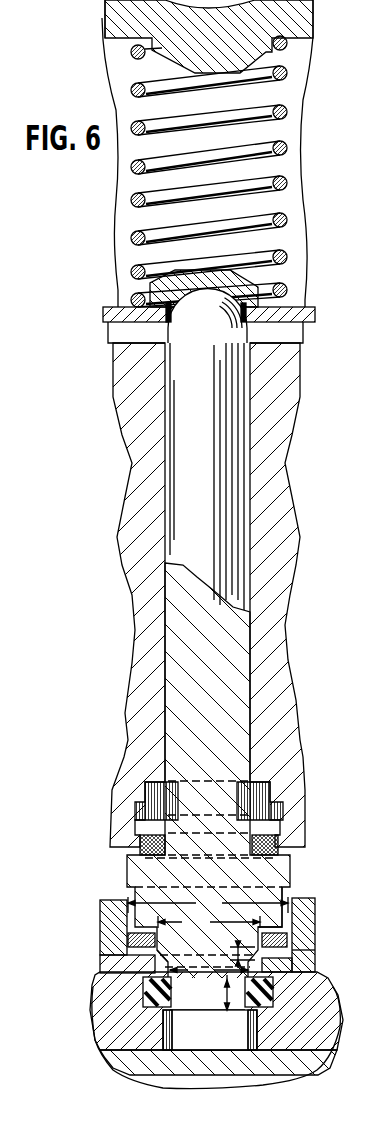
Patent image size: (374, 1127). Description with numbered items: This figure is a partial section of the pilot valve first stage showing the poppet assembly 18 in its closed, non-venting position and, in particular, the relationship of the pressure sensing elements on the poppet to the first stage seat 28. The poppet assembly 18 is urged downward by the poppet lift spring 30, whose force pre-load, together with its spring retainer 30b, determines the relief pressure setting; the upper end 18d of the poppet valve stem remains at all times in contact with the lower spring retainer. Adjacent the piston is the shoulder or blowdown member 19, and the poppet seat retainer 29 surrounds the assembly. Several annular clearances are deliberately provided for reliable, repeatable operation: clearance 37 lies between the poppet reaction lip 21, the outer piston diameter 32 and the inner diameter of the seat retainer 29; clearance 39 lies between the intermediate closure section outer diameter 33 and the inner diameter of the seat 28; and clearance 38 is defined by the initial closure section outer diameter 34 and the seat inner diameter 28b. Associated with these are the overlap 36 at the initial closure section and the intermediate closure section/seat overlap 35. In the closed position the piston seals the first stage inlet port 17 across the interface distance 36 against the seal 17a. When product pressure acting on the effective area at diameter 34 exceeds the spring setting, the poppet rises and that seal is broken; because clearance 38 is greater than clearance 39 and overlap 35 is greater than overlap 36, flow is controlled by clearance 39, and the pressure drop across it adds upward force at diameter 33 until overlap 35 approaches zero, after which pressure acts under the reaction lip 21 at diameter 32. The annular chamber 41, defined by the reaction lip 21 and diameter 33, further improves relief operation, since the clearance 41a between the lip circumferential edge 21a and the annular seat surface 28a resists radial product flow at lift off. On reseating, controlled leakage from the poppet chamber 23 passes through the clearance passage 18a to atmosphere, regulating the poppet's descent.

The first stage inlet port 17 is at (323, 1067).
The seal 17a is at (258, 1040).
The first stage poppet assembly 18 is at (238, 423).
The clearance passage 18a is at (280, 733).
The upper end of poppet valve stem 18d is at (227, 327).
The shoulder or blowdown member 19 is at (270, 817).
The first stage poppet reaction lip 21 is at (132, 940).
The lip circumferential edge 21a is at (307, 950).
The first stage poppet chamber 23 is at (287, 850).
The first stage seat 28 is at (310, 992).
The annular seat surface 28a is at (293, 950).
The inner diameter of seat 28b is at (257, 1060).
The poppet seat retainer 29 is at (307, 960).
The poppet lift spring 30 is at (262, 192).
The spring retainer 30b is at (300, 8).
The outer piston diameter 32 is at (208, 903).
The second or intermediate closure section outer diameter 33 is at (209, 921).
The initial closure section outer diameter 34 is at (209, 969).
The intermediate closure section/seat overlap 35 is at (232, 947).
The relief closure section overlap 36 is at (214, 992).
The clearance 37 is at (297, 922).
The clearance 38 is at (174, 948).
The clearance 39 is at (113, 962).
The annular chamber 41 is at (275, 950).
The clearance 41a is at (127, 947).